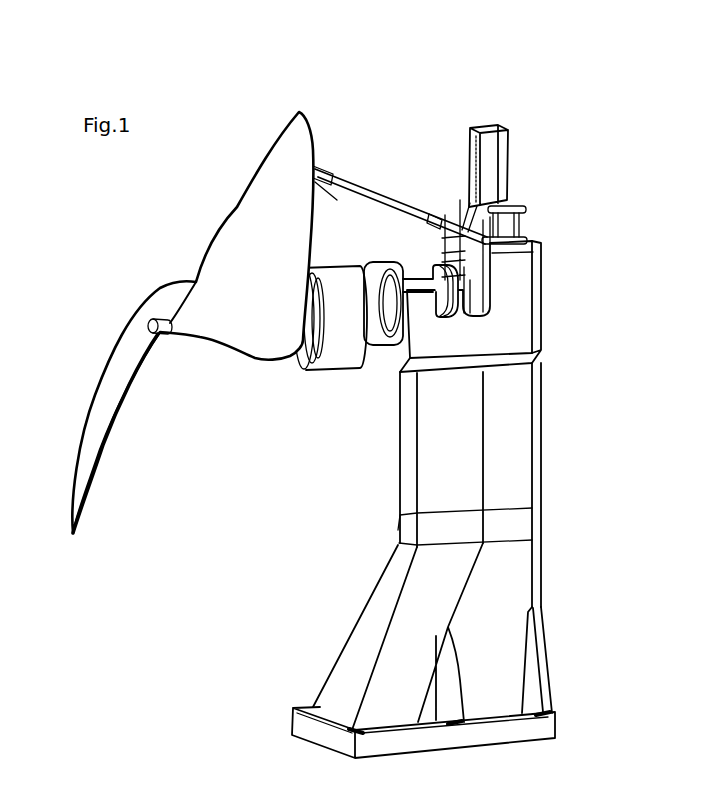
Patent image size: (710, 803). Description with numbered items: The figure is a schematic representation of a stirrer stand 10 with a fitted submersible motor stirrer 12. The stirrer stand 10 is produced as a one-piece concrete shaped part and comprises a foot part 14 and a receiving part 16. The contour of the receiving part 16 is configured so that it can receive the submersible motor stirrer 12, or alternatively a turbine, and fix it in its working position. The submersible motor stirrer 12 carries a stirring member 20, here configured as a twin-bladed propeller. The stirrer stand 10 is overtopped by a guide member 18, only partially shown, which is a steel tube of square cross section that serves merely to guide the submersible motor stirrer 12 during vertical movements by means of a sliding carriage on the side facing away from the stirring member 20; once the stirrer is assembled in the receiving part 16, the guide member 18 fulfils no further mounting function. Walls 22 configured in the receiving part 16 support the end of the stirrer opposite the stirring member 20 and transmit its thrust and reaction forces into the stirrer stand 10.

The stirrer stand 10 is at (537, 472).
The submersible motor stirrer 12 is at (340, 267).
The foot part 14 is at (548, 710).
The receiving part 16 is at (543, 317).
The guide member 18 is at (510, 140).
The stirring member 20 is at (108, 412).
The walls 22 is at (533, 240).